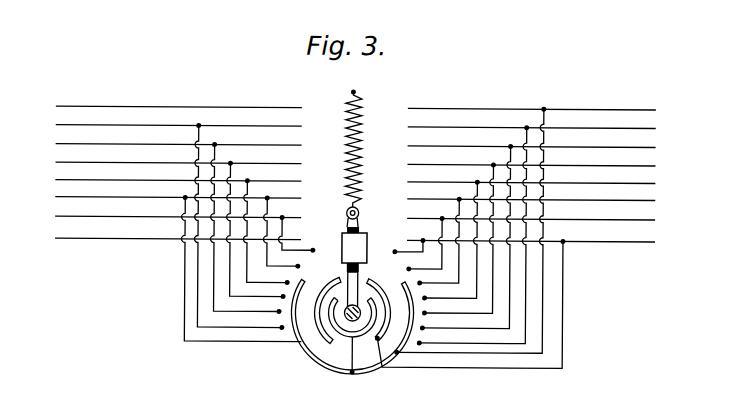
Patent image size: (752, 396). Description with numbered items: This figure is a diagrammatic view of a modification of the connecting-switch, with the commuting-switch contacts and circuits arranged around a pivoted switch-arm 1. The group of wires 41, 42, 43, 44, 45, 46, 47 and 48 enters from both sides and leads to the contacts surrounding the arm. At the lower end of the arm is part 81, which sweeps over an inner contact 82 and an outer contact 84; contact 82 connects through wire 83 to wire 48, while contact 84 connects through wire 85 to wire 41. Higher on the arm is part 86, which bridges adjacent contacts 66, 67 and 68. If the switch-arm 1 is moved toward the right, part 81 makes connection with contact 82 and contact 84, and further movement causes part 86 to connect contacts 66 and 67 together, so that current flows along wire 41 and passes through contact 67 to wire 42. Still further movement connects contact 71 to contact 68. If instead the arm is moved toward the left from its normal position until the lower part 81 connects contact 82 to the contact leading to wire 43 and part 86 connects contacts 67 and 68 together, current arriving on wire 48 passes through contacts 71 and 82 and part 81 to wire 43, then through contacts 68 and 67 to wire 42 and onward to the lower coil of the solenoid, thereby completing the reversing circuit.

The switch-arm 1 is at (359, 214).
The wire 41 is at (352, 237).
The wire 42 is at (352, 215).
The wire 43 is at (352, 264).
The wire 44 is at (353, 235).
The wire 45 is at (353, 234).
The wire 46 is at (352, 232).
The wire 47 is at (352, 230).
The wire 48 is at (353, 105).
The contact 66 is at (394, 252).
The contact 67 is at (312, 249).
The contact 68 is at (297, 265).
The contact 71 is at (410, 303).
The lower part of the switch-arm 81 is at (348, 279).
The contact 82 is at (370, 336).
The wire 83 is at (545, 351).
The contact 84 is at (389, 318).
The wire 85 is at (563, 322).
The part of the switch-arm 86 is at (367, 244).